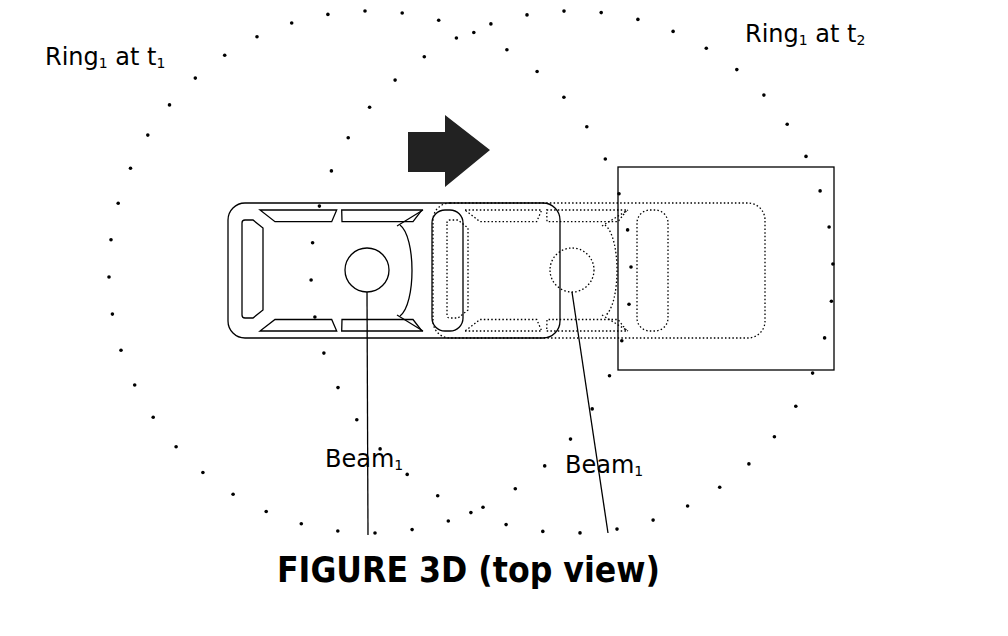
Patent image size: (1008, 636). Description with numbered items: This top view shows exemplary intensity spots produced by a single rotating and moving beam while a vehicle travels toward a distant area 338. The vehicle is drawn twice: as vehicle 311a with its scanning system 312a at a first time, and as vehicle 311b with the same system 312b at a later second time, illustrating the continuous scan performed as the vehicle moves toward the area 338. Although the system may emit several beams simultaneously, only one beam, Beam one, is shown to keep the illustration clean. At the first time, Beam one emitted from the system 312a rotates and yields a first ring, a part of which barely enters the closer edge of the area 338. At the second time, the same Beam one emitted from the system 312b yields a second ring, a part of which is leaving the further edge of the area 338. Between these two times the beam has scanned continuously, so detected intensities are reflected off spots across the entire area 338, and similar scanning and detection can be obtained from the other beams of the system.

The vehicle at time t1 311a is at (290, 205).
The vehicle at time t2 311b is at (597, 205).
The system at time t1 312a is at (358, 291).
The system at time t2 312b is at (570, 292).
The distant area 338 is at (834, 167).